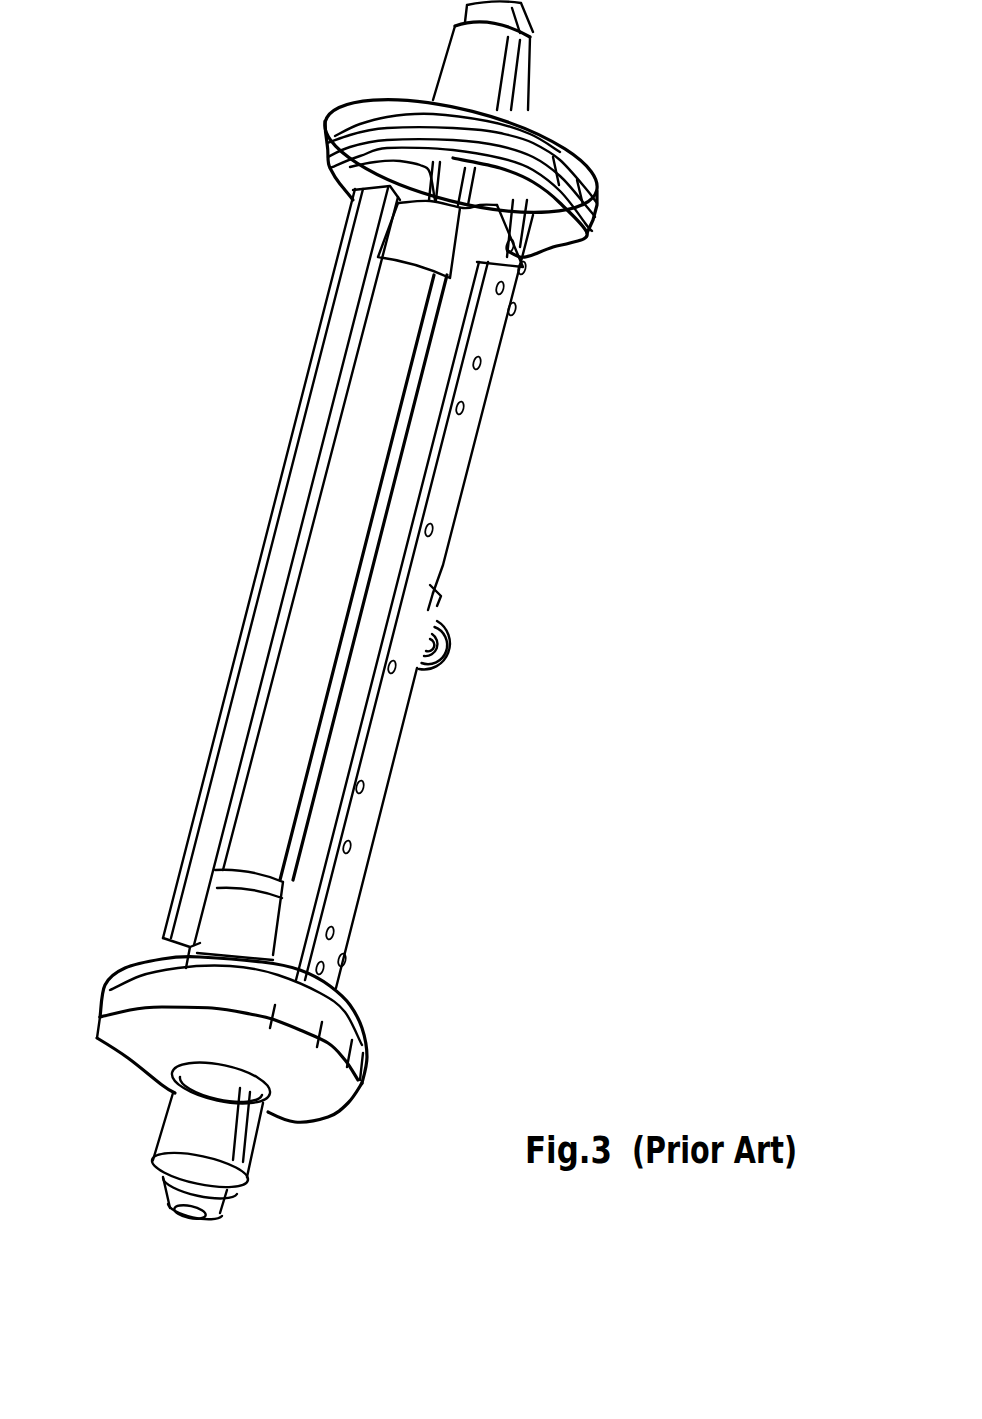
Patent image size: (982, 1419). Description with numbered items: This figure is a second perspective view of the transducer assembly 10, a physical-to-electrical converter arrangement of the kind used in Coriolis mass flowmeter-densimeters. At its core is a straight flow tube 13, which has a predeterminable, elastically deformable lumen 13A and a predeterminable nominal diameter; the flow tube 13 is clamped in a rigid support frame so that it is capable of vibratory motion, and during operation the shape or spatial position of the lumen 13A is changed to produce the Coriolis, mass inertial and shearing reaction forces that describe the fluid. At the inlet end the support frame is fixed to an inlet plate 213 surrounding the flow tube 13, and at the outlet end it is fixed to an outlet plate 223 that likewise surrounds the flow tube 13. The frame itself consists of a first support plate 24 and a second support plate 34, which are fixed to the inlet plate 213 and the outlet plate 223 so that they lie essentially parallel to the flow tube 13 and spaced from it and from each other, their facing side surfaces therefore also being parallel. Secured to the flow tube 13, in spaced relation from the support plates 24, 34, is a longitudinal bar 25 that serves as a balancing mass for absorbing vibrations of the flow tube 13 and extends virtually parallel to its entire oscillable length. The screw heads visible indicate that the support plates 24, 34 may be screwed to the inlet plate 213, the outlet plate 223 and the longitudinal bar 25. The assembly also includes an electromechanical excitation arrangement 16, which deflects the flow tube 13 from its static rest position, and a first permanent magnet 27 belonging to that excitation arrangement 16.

The transducer assembly 10 is at (392, 38).
The flow tube 13 is at (500, 157).
The lumen 13A is at (188, 1226).
The excitation arrangement 16 is at (458, 659).
The first support plate 24 is at (424, 447).
The longitudinal bar 25 is at (410, 332).
The first permanent magnet 27 is at (450, 638).
The second support plate 34 is at (303, 452).
The inlet plate 213 is at (262, 933).
The outlet plate 223 is at (480, 270).